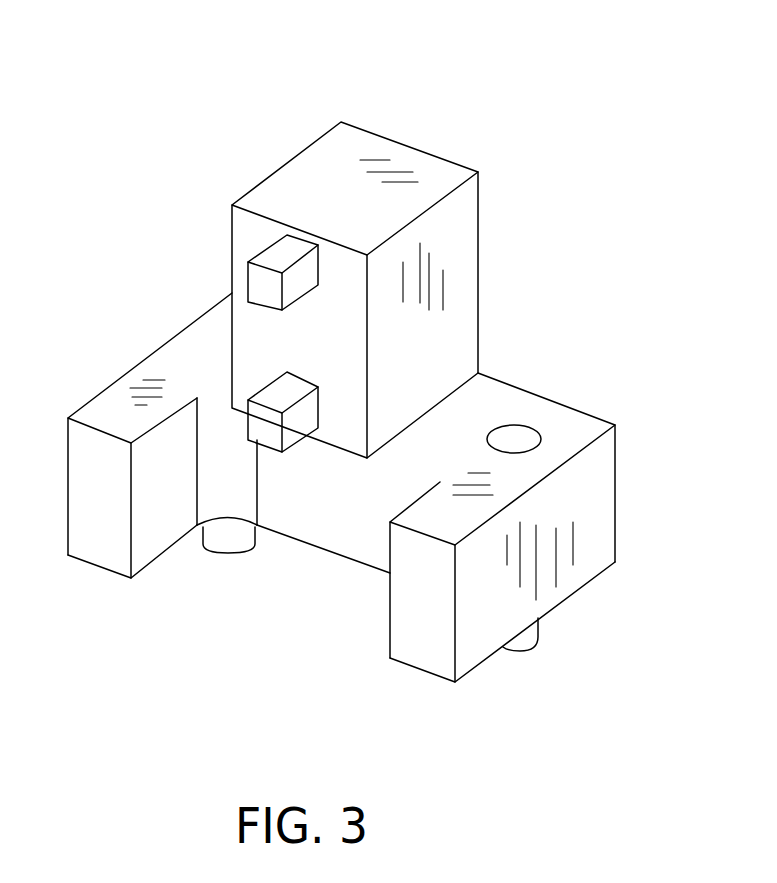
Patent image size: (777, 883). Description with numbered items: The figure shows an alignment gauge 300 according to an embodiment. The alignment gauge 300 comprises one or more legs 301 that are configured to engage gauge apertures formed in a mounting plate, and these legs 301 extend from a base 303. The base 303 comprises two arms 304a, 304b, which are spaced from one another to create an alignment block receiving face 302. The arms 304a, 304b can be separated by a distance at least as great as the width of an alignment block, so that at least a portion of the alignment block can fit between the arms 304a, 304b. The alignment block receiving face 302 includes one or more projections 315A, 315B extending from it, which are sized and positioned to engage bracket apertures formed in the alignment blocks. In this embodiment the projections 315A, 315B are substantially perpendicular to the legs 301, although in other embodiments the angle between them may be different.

The alignment gauge 300 is at (539, 76).
The legs 301 is at (223, 553).
The alignment block receiving face 302 is at (242, 349).
The base 303 is at (522, 408).
The arm 304a is at (89, 562).
The arm 304b is at (428, 675).
The projection 315A is at (297, 253).
The projection 315B is at (300, 382).